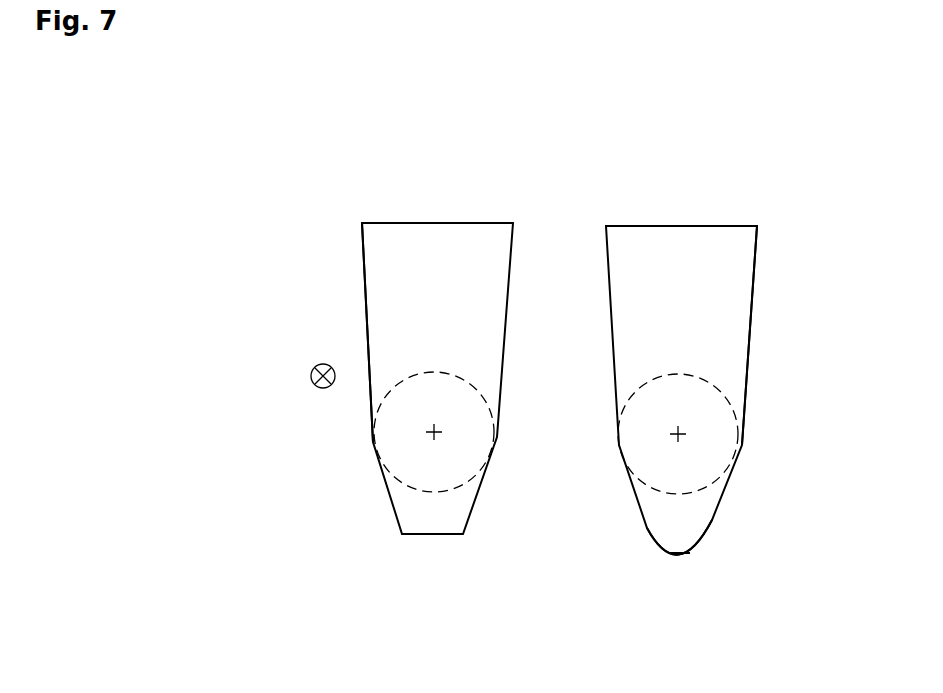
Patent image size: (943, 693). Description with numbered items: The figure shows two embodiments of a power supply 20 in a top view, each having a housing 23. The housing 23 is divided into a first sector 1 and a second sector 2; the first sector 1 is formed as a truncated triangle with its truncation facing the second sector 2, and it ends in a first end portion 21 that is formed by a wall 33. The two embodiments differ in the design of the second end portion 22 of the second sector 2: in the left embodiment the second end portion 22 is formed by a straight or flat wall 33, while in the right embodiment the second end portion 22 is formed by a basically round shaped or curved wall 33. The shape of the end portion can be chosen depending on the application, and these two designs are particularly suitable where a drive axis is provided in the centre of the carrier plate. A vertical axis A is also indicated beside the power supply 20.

The first sector 1 is at (605, 315).
The second sector 2 is at (632, 508).
The power supply 20 is at (503, 189).
The first end portion 21 is at (439, 213).
The second end portion 22 is at (399, 563).
The housing 23 is at (363, 268).
The side wall 33 is at (405, 223).
The vertical axis A is at (310, 387).